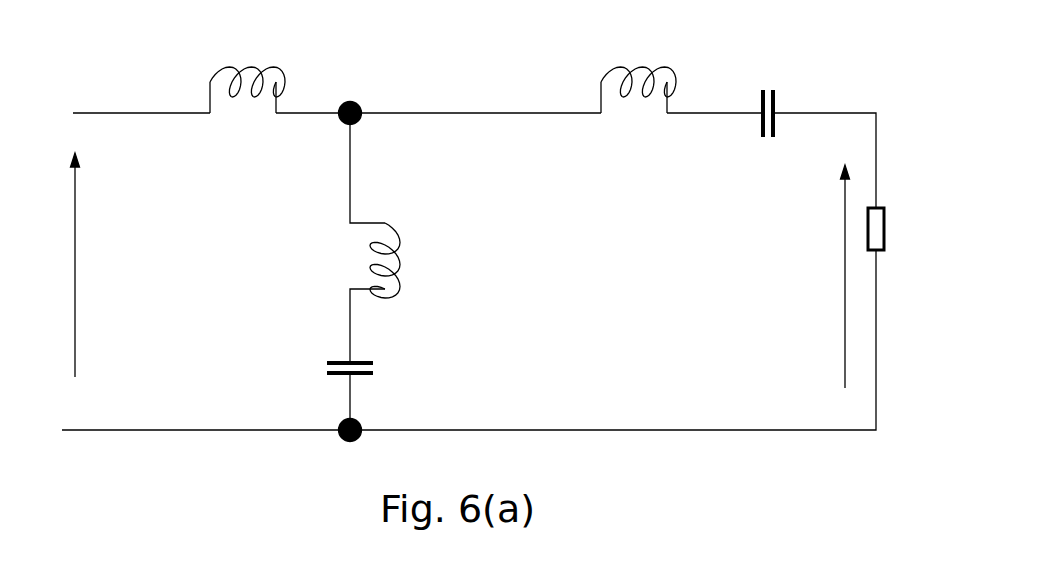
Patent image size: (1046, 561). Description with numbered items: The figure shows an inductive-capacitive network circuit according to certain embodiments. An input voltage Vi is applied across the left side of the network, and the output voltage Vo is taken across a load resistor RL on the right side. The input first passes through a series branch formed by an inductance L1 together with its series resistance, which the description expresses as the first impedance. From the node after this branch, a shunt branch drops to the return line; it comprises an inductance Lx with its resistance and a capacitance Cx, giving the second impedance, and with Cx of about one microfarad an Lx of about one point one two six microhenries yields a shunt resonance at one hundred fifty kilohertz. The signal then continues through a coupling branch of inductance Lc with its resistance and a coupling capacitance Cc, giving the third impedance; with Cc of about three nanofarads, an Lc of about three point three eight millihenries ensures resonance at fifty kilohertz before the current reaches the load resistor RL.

The inductance L1 is at (247, 73).
The equivalent inductance Lc is at (638, 73).
The capacitance Cc is at (766, 95).
The inductance Lx is at (416, 260).
The capacitance Cx is at (367, 372).
The load resistor RL is at (889, 237).
The input voltage Vi is at (60, 265).
The output voltage Vo is at (830, 276).